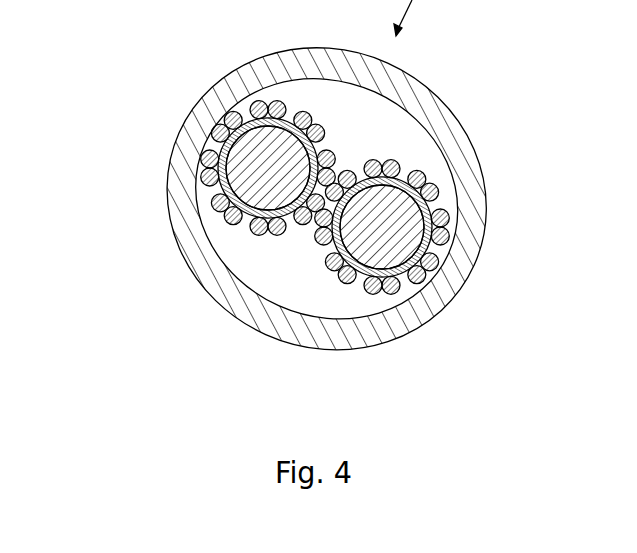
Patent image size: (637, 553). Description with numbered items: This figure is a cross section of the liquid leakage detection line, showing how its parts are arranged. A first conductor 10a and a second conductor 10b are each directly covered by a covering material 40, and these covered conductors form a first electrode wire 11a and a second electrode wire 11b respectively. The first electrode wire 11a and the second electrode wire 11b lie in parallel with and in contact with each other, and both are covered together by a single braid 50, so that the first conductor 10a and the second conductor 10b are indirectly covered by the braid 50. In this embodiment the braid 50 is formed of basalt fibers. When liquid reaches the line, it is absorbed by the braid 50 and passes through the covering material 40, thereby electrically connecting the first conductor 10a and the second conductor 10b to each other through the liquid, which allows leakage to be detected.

The first conductor 10a is at (228, 192).
The second conductor 10b is at (433, 211).
The first electrode wire 11a is at (181, 179).
The second electrode wire 11b is at (472, 222).
The covering material 40 is at (211, 206).
The braid 50 is at (321, 343).